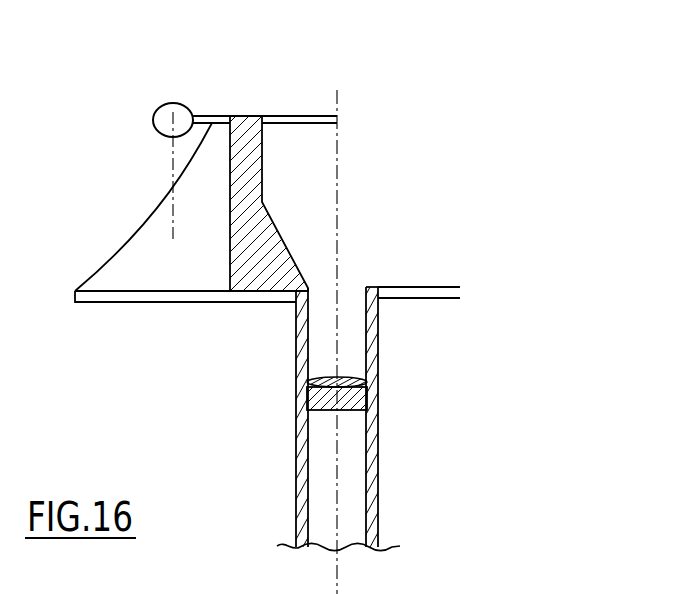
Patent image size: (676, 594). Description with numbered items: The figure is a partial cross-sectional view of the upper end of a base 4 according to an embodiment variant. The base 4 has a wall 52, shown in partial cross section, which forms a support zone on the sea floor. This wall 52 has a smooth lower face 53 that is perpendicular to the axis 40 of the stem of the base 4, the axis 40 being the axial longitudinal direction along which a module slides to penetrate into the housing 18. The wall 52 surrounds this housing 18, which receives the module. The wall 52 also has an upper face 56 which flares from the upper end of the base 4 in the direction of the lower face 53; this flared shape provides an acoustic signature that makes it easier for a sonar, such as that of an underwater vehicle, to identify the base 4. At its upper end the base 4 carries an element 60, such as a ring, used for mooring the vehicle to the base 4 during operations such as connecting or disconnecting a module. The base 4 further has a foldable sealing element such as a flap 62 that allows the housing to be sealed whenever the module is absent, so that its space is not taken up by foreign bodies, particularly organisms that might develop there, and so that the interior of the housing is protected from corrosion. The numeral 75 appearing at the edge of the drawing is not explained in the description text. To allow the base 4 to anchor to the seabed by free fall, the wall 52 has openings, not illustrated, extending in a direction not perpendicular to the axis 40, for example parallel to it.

The base 4 is at (302, 492).
The housing 18 is at (298, 150).
The axial longitudinal direction 40 is at (375, 465).
The wall 52 is at (157, 252).
The lower face 53 is at (136, 310).
The upper face 56 is at (168, 178).
The element 60 is at (178, 118).
The flap 62 is at (302, 114).
The lower element 75 is at (276, 591).